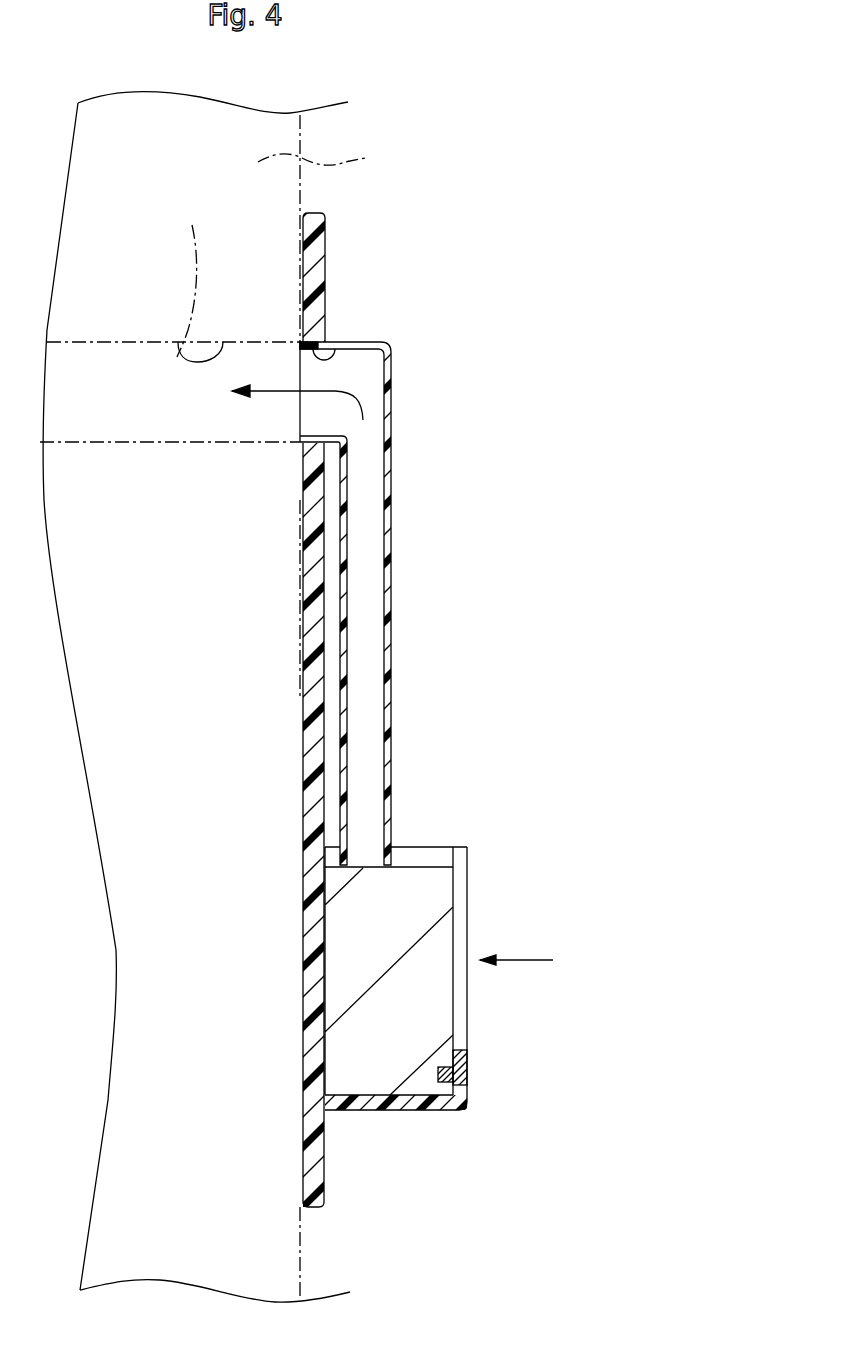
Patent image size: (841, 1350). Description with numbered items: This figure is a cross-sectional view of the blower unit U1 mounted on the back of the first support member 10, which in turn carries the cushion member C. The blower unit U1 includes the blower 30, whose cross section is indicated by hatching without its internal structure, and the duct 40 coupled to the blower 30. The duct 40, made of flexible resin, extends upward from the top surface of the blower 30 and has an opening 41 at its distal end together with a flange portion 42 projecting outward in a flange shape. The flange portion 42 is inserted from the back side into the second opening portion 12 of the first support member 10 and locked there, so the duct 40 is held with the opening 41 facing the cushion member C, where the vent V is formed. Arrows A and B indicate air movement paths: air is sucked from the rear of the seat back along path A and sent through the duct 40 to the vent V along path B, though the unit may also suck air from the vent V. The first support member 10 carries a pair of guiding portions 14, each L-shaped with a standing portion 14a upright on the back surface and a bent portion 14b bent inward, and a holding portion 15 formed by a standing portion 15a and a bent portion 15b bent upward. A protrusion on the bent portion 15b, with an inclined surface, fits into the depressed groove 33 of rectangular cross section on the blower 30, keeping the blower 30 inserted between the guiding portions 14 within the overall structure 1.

The vehicle structure 1 is at (640, 121).
The blower unit U1 is at (618, 357).
The first support member 10 is at (215, 696).
The second opening portion 12 is at (313, 437).
The flange portion 42 is at (298, 318).
The duct 40 is at (414, 593).
The opening 41 is at (336, 358).
The movement path B is at (323, 390).
The cushion member C is at (324, 158).
The vent V is at (187, 278).
The blower 30 is at (460, 1011).
The guiding portions 14 is at (438, 913).
The standing portion 14a is at (428, 858).
The bent portion 14b is at (460, 920).
The holding portion 15 is at (437, 1114).
The standing portion 15a is at (378, 1103).
The bent portion 15b is at (463, 1081).
The depressed groove 33 is at (438, 1072).
The movement path A is at (523, 962).